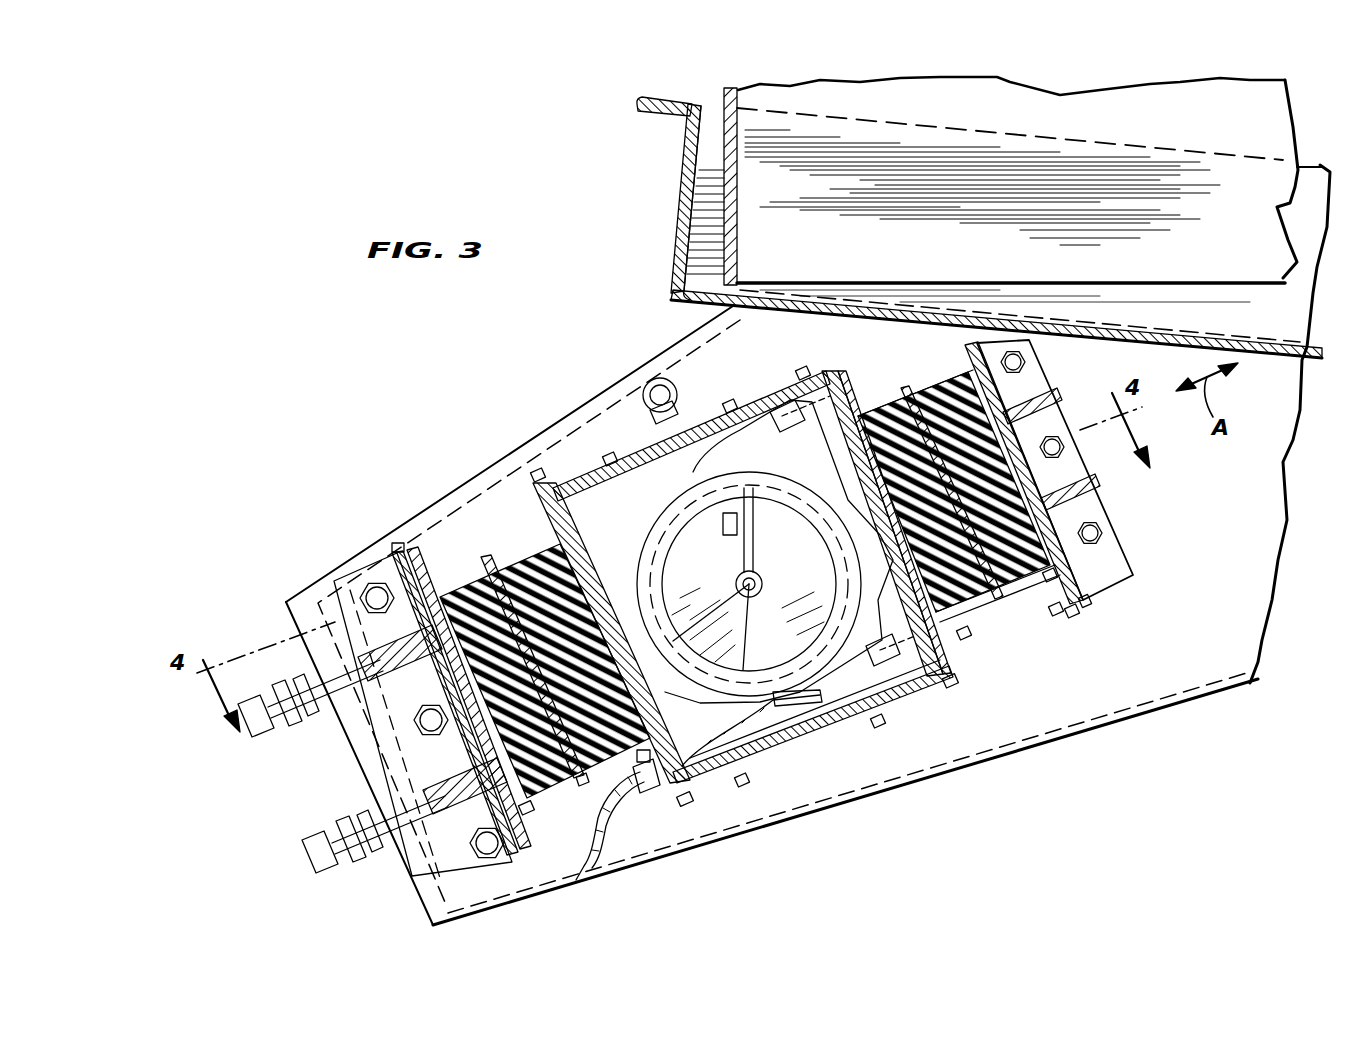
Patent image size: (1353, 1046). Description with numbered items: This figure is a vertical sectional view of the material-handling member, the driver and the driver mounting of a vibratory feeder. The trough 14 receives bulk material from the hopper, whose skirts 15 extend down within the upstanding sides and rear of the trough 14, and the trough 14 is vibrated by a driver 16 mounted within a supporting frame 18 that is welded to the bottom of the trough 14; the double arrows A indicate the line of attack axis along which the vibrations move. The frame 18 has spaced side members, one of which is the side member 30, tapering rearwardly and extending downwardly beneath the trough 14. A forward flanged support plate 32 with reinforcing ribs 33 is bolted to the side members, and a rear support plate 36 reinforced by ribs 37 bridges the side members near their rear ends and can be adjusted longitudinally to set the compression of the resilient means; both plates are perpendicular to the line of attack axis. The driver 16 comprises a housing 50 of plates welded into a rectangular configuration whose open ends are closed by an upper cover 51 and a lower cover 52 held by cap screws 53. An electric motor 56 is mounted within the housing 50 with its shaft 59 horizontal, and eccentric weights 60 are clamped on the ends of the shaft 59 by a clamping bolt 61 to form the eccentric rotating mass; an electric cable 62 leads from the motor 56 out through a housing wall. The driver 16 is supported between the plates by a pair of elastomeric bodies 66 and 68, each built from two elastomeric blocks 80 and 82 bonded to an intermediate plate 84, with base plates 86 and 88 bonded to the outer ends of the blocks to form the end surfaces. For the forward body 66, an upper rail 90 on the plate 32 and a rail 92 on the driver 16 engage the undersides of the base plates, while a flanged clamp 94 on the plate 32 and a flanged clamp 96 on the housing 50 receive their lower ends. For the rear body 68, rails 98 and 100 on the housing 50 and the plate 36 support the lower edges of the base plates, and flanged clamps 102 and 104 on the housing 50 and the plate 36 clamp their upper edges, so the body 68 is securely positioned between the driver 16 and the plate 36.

The trough 14 is at (688, 198).
The skirts 15 is at (1262, 122).
The driver 16 is at (562, 448).
The supporting frame 18 is at (922, 757).
The side member 30 is at (1110, 720).
The forward flanged support plate 32 is at (1120, 565).
The reinforcing ribs 33 is at (1060, 390).
The rear support plate 36 is at (390, 571).
The ribs 37 is at (412, 648).
The housing 50 is at (667, 393).
The upper cover 51 is at (740, 385).
The lower cover 52 is at (842, 722).
The cap screws 53 is at (608, 445).
The electric motor 56 is at (660, 522).
The motor shaft 59 is at (762, 582).
The weights 60 is at (750, 650).
The clamping bolt 61 is at (722, 526).
The electric cable 62 is at (726, 750).
The elastomeric body 66 is at (1015, 595).
The elastomeric body 68 is at (465, 575).
The elastomeric block 80 is at (870, 410).
The elastomeric block 82 is at (900, 410).
The intermediate plate 84 is at (1000, 600).
The base plate 86 is at (1050, 576).
The base plate 88 is at (940, 615).
The upper rail 90 is at (933, 353).
The rail 92 is at (830, 372).
The flanged clamp 94 is at (1075, 595).
The flanged clamp 96 is at (958, 664).
The rail 98 is at (620, 772).
The rail 100 is at (622, 800).
The flanged clamp 102 is at (538, 488).
The flanged clamp 104 is at (416, 556).